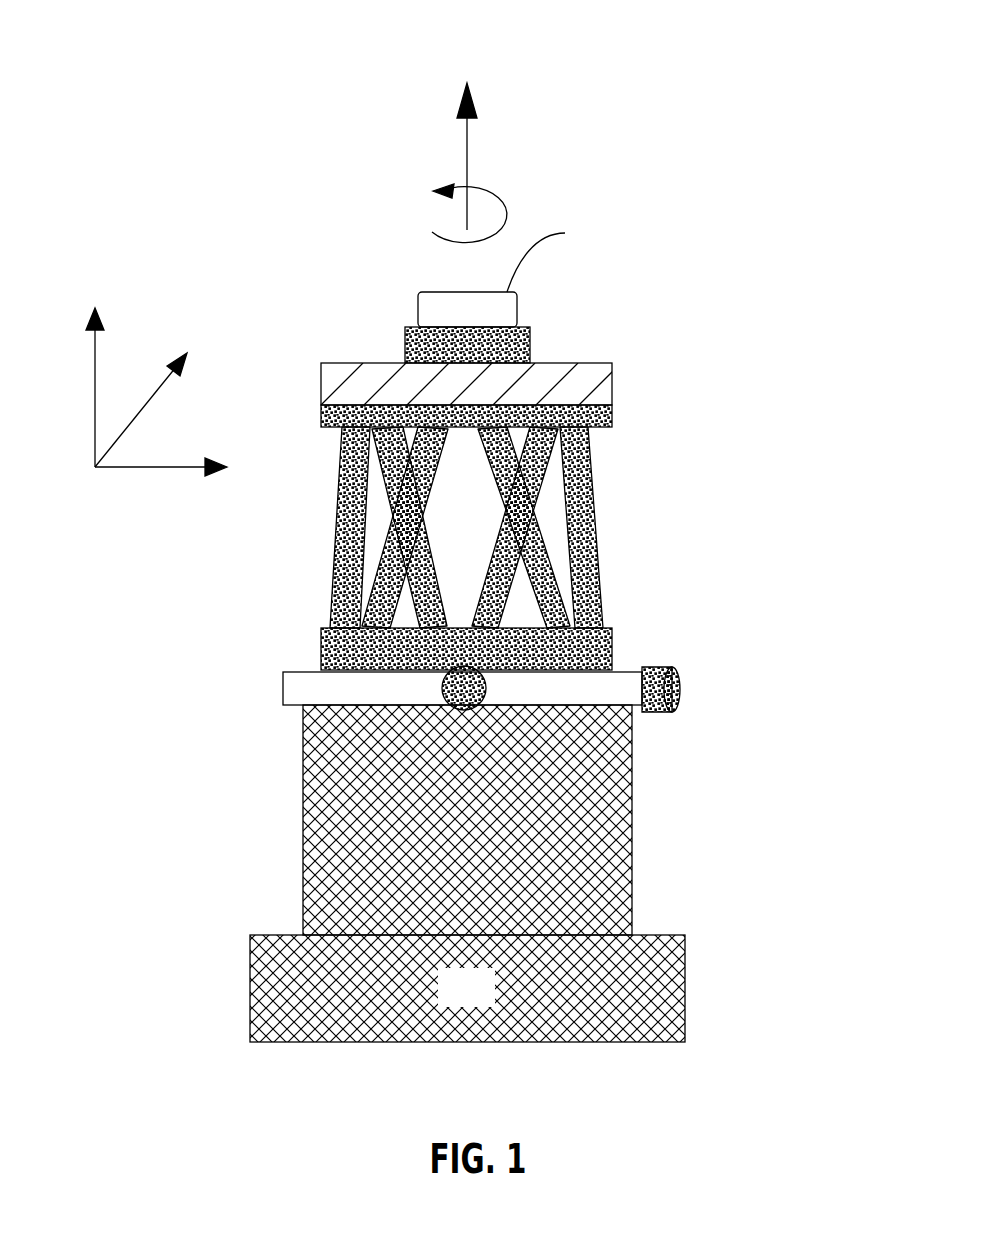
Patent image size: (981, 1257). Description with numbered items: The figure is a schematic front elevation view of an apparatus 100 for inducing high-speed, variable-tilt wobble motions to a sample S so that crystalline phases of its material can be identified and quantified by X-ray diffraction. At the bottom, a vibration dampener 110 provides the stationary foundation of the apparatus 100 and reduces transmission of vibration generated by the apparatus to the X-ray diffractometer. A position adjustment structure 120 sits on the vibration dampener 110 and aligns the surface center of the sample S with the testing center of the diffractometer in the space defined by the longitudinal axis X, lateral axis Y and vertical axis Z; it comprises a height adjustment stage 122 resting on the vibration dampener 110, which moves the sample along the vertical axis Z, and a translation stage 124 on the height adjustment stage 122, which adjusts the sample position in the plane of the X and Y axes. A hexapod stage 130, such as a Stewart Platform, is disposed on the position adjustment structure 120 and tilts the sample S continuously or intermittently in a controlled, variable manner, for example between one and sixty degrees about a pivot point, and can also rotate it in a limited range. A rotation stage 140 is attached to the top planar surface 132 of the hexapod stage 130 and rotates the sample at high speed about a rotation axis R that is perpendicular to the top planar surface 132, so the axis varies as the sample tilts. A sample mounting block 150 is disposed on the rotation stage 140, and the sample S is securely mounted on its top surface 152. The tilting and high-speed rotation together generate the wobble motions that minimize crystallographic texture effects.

The apparatus 100 is at (490, 35).
The vibration dampener 110 is at (489, 1003).
The position adjustment structure 120 is at (466, 787).
The height adjustment stage 122 is at (278, 710).
The translation stage 124 is at (283, 688).
The hexapod stage 130 is at (479, 497).
The top planar surface 132 is at (347, 395).
The rotation stage 140 is at (607, 387).
The sample mounting block 150 is at (530, 343).
The top surface 152 is at (408, 317).